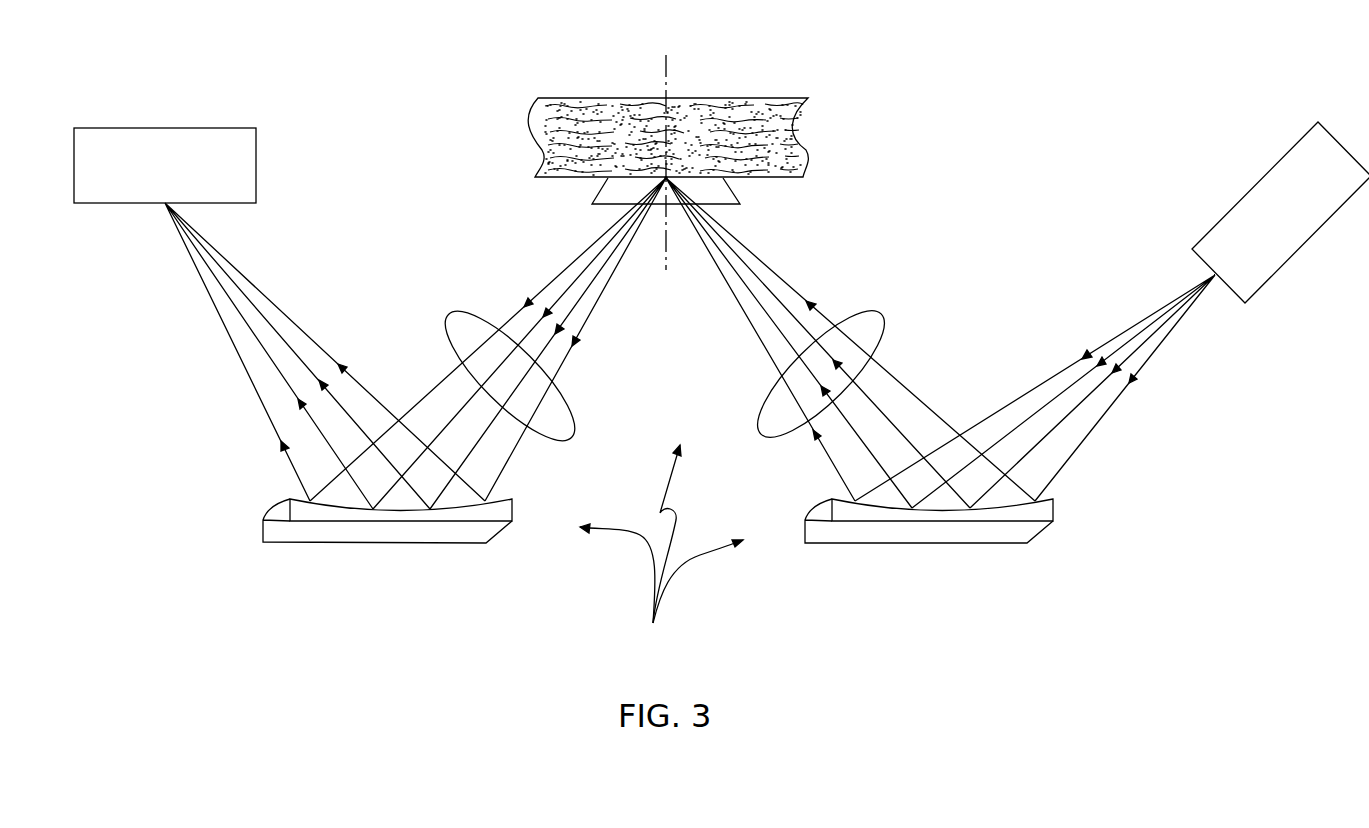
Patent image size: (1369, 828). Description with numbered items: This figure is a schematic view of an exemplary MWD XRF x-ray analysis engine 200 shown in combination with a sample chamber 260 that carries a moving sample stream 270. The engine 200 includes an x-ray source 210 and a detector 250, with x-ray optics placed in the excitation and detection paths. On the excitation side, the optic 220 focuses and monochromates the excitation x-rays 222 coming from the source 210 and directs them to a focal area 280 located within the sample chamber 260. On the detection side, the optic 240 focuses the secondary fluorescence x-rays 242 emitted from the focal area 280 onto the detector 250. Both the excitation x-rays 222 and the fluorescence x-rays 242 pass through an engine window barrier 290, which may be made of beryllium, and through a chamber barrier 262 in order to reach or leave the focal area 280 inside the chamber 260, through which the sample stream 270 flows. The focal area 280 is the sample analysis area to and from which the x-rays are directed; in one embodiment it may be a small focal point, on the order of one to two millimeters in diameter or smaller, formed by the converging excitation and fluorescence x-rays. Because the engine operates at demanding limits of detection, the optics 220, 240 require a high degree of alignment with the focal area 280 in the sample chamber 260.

The x-ray analysis engine 200 is at (661, 553).
The x-ray source 210 is at (1255, 183).
The x-ray optic 220 is at (1020, 527).
The excitation x-rays 222 is at (880, 317).
The x-ray optic 240 is at (323, 538).
The fluorescence x-rays 242 is at (450, 316).
The detector 250 is at (256, 165).
The sample chamber 260 is at (745, 98).
The chamber barrier 262 is at (714, 183).
The sample stream 270 is at (775, 138).
The focal area 280 is at (666, 178).
The engine window barrier 290 is at (658, 207).